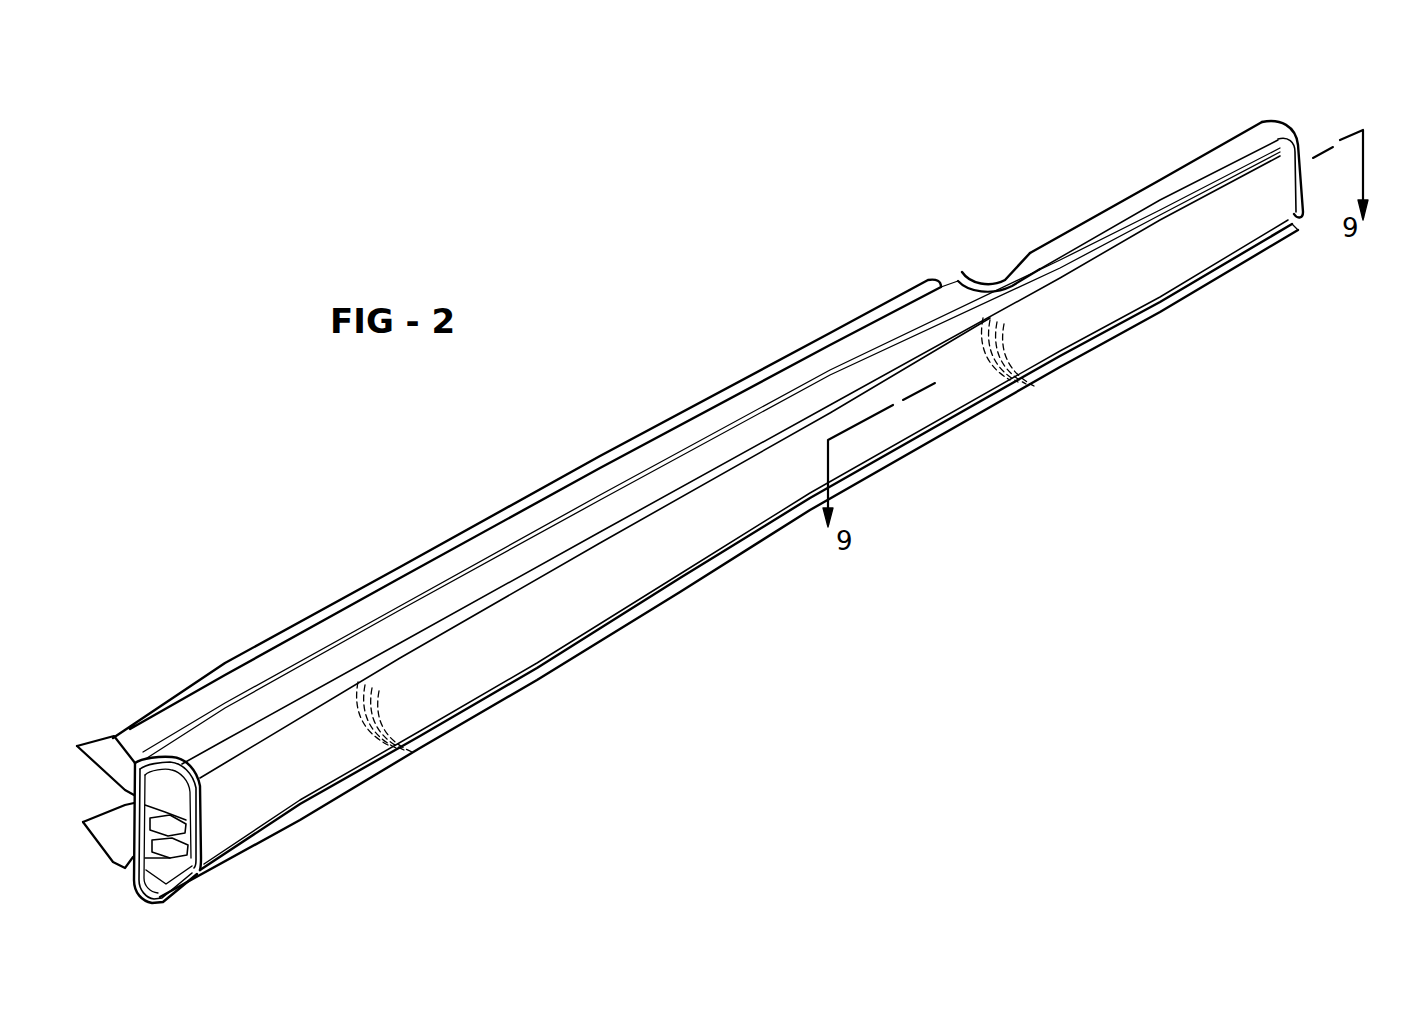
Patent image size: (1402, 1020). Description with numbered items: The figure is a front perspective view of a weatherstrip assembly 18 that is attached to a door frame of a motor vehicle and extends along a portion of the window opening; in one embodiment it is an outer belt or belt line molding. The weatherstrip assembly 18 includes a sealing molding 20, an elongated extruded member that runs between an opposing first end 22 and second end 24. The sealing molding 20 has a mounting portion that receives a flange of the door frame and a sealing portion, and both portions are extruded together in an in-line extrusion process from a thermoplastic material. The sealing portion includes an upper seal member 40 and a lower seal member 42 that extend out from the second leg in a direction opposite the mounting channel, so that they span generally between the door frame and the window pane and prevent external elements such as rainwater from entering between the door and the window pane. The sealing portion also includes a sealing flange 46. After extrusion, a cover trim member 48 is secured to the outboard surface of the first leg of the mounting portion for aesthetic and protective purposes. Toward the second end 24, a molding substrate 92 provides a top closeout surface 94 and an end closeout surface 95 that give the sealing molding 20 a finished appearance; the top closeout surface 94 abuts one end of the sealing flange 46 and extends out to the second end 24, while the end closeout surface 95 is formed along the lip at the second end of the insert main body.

The weatherstrip assembly 18 is at (537, 680).
The sealing molding 20 is at (680, 597).
The first end 22 is at (168, 766).
The second end 24 is at (1262, 122).
The upper seal member 40 is at (484, 525).
The lower seal member 42 is at (93, 805).
The sealing flange 46 is at (716, 425).
The cover trim member 48 is at (1090, 313).
The molding substrate 92 is at (1120, 219).
The top closeout surface 94 is at (1030, 258).
The end closeout surface 95 is at (1305, 143).